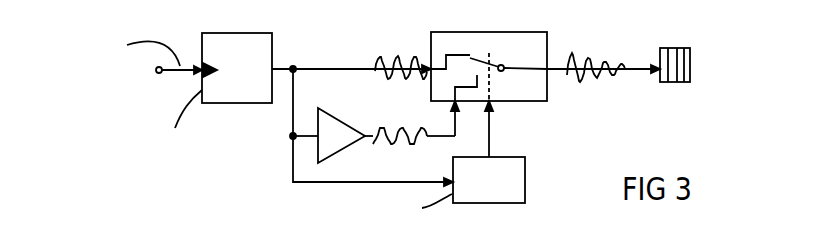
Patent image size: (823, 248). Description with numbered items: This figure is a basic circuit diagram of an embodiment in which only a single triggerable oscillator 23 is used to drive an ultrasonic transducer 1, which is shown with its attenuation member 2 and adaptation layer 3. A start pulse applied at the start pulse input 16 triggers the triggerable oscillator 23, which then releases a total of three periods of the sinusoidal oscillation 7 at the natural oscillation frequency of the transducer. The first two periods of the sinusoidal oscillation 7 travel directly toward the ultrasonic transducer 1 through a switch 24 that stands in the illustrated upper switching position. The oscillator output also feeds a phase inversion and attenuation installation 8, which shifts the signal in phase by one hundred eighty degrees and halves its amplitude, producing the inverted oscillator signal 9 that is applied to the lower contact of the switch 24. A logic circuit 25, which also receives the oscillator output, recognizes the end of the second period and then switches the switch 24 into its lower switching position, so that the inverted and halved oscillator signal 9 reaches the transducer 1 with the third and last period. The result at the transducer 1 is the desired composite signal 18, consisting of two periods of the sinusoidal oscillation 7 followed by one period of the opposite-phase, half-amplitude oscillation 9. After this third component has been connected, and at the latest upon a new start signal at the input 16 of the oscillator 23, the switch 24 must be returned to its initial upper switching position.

The ultrasonic transducer 1 is at (676, 48).
The attenuation member 2 is at (665, 47).
The adaptation layer 3 is at (685, 82).
The sinusoidal oscillation 7 is at (384, 62).
The phase inversion and attenuation installation 8 is at (340, 150).
The sinusoidal oscillation 9 is at (391, 132).
The start pulse input 16 is at (143, 61).
The sinusoidal output oscillation 18 is at (590, 50).
The triggerable oscillator 23 is at (218, 103).
The switch 24 is at (482, 53).
The logic circuit 25 is at (525, 177).